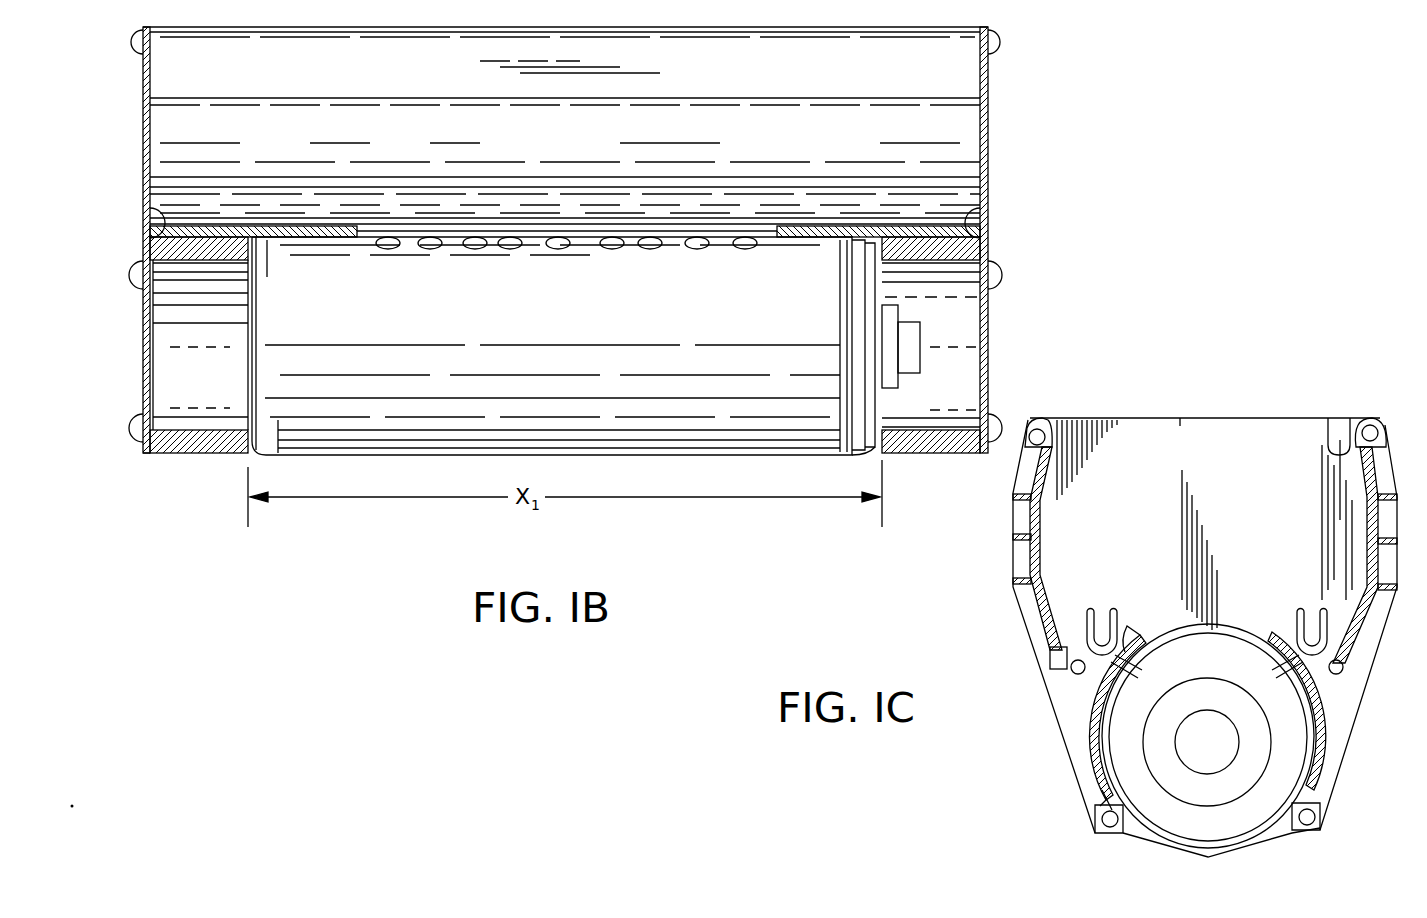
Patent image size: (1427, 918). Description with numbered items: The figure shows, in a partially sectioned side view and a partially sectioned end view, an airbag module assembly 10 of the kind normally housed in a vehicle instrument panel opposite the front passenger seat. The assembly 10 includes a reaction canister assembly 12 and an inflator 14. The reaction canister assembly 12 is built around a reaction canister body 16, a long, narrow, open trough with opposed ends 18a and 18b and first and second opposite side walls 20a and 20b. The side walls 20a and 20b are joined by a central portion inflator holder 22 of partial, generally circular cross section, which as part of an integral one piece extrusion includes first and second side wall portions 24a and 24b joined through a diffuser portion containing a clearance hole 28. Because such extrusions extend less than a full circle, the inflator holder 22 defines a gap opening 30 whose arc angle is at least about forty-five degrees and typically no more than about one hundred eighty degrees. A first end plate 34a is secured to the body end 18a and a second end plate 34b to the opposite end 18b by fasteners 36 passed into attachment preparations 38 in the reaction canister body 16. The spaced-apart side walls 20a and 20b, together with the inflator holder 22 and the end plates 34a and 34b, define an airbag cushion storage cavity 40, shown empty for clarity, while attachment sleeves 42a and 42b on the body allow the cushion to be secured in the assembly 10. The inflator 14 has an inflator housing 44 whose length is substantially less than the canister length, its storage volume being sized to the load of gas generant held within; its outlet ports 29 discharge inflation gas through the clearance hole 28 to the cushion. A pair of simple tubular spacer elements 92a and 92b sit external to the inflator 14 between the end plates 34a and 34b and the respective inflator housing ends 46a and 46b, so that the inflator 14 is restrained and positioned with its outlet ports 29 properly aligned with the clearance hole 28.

In FIG. 1B, the airbag module assembly 10 is at (114, 420).
In FIG. 1C, the airbag module assembly 10 is at (1170, 405).
In FIG. 1B, the reaction canister assembly 12 is at (988, 158).
In FIG. 1C, the reaction canister assembly 12 is at (1040, 620).
In FIG. 1B, the inflator 14 is at (770, 270).
In FIG. 1C, the inflator 14 is at (1262, 800).
In FIG. 1B, the reaction canister body 16 is at (950, 222).
In FIG. 1C, the reaction canister body 16 is at (1095, 713).
In FIG. 1B, the reaction canister body end 18a is at (152, 212).
In FIG. 1B, the reaction canister body end 18b is at (978, 220).
In FIG. 1C, the first side wall 20a is at (1030, 470).
In FIG. 1B, the second side wall 20b is at (558, 163).
In FIG. 1C, the second side wall 20b is at (1333, 430).
In FIG. 1C, the central portion inflator holder 22 is at (1105, 800).
In FIG. 1C, the first side wall portion 24a is at (1095, 752).
In FIG. 1C, the second side wall portion 24b is at (1325, 745).
In FIG. 1B, the clearance hole 28 is at (392, 230).
In FIG. 1C, the clearance hole 28 is at (1172, 622).
In FIG. 1B, the outlet ports 29 is at (507, 250).
In FIG. 1C, the gap opening 30 is at (1122, 834).
In FIG. 1B, the first end plate 34a is at (147, 352).
In FIG. 1C, the first end plate 34a is at (1275, 511).
In FIG. 1B, the second end plate 34b is at (990, 290).
In FIG. 1B, the fasteners 36 is at (135, 45).
In FIG. 1C, the attachment preparations 38 is at (1036, 422).
In FIG. 1B, the airbag cushion storage cavity 40 is at (962, 125).
In FIG. 1C, the airbag cushion storage cavity 40 is at (1130, 458).
In FIG. 1C, the attachment sleeve 42a is at (1090, 615).
In FIG. 1C, the attachment sleeve 42b is at (1322, 615).
In FIG. 1B, the inflator housing 44 is at (622, 328).
In FIG. 1B, the inflator housing end 46a is at (230, 280).
In FIG. 1B, the inflator housing end 46b is at (900, 285).
In FIG. 1B, the tubular spacer element 92a is at (198, 455).
In FIG. 1B, the tubular spacer element 92b is at (910, 455).